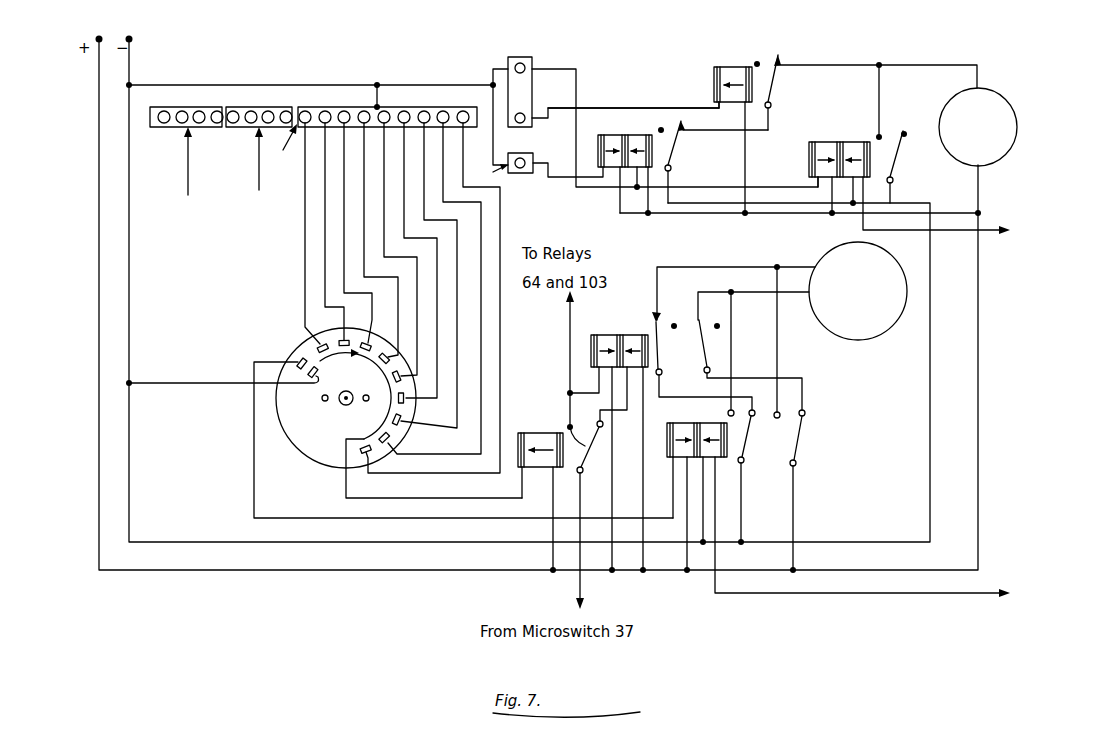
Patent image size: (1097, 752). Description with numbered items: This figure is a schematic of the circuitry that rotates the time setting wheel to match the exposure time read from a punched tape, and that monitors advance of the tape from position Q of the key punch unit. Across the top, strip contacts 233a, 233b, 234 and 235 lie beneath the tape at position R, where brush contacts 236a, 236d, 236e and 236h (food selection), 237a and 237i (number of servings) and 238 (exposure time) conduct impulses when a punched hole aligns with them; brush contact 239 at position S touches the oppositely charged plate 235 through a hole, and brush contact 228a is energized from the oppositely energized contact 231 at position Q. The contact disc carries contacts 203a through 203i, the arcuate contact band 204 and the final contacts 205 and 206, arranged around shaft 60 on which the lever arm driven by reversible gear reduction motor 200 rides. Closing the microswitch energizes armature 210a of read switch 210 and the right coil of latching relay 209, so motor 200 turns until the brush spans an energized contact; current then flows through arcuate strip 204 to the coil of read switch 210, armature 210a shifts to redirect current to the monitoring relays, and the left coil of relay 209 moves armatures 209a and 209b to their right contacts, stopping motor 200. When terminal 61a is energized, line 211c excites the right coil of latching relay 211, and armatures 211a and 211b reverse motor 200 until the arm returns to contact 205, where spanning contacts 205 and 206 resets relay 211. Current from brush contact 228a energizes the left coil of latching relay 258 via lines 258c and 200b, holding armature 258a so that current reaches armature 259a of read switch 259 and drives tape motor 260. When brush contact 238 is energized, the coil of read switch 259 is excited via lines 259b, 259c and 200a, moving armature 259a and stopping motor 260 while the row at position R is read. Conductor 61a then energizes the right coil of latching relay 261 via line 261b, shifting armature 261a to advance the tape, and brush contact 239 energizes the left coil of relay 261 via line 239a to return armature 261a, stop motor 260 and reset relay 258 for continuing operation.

The shaft 60 is at (342, 403).
The terminal 61a is at (1036, 412).
The reversible gear reduction motor 200 is at (857, 327).
The line 200a is at (99, 106).
The line 200b is at (130, 246).
The electrical contact 203a is at (358, 450).
The electrical contact 203i is at (314, 349).
The arcuate contact band 204 is at (355, 362).
The electrical contact 205 is at (298, 362).
The electrical contact 206 is at (314, 379).
The double pole double throw latching relay 209 is at (616, 335).
The armature 209a is at (661, 347).
The armature 209b is at (713, 343).
The single pole single throw read switch 210 is at (537, 433).
The armature 210a is at (582, 442).
The double pole double throw latching relay 211 is at (697, 410).
The armature 211a is at (745, 433).
The armature 211b is at (800, 432).
The line 211c is at (868, 592).
The brush contact 228a is at (527, 144).
The contact 231 is at (487, 170).
The electrical strip contact 233a is at (188, 179).
The electrical strip contact 233b is at (259, 192).
The electrical base strip 234 is at (282, 148).
The plate 235 is at (524, 90).
The brush contact 236a is at (164, 101).
The brush contact 236d is at (217, 101).
The brush contact 236e is at (233, 101).
The brush contact 236h is at (286, 101).
The brush contact 237a is at (475, 78).
The brush contact 237i is at (337, 82).
The brush contact 238 is at (525, 113).
The electrical brush contact 239 is at (517, 62).
The line 239a is at (592, 188).
The single pole single throw latching relay 258 is at (627, 135).
The armature 258a is at (675, 156).
The line 258c is at (567, 178).
The read switch 259 is at (728, 67).
The armature 259a is at (779, 86).
The line 259b is at (672, 107).
The line 259c is at (745, 164).
The motor 260 is at (997, 108).
The double pole double throw latching relay 261 is at (850, 128).
The armature 261a is at (900, 162).
The line 261b is at (957, 228).